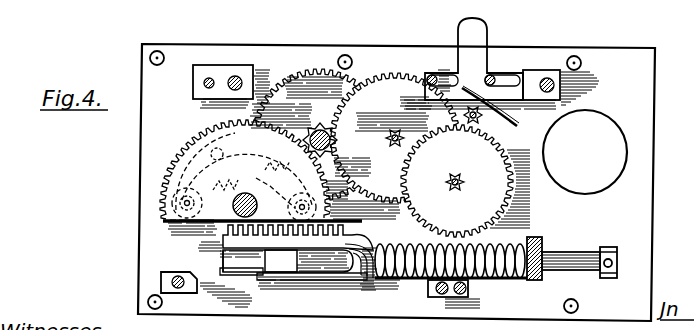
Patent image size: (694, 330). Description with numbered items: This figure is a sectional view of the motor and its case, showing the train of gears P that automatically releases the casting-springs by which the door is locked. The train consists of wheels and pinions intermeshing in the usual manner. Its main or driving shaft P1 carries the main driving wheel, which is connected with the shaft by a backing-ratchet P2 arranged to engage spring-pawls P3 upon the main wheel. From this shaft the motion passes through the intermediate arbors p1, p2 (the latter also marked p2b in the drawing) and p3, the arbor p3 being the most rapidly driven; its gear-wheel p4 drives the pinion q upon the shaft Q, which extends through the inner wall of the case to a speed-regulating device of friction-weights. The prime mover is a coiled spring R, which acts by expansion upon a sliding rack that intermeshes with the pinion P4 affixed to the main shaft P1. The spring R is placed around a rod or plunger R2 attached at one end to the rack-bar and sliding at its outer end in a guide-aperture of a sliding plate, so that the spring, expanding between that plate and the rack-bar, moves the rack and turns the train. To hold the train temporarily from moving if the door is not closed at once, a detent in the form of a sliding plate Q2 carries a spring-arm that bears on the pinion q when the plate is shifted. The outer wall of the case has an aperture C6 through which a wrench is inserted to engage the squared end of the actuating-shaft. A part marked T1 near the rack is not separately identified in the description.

The train of gears P is at (260, 135).
The main or driving shaft P1 is at (236, 199).
The backing-ratchet P2 is at (256, 176).
The spring-pawls P3 is at (300, 198).
The pinion P4 is at (232, 252).
The intermediate arbor p1 is at (320, 129).
The intermediate arbor p2 is at (388, 138).
The block on bar p2b is at (281, 261).
The intermediate arbor p3 is at (462, 181).
The gear-wheel p4 is at (457, 181).
The shaft Q is at (463, 115).
The sliding plate Q2 is at (474, 30).
The pinion q is at (498, 120).
The coiled spring R is at (396, 246).
The rod or plunger R2 is at (570, 248).
The bar T1 is at (296, 262).
The aperture C6 is at (585, 152).